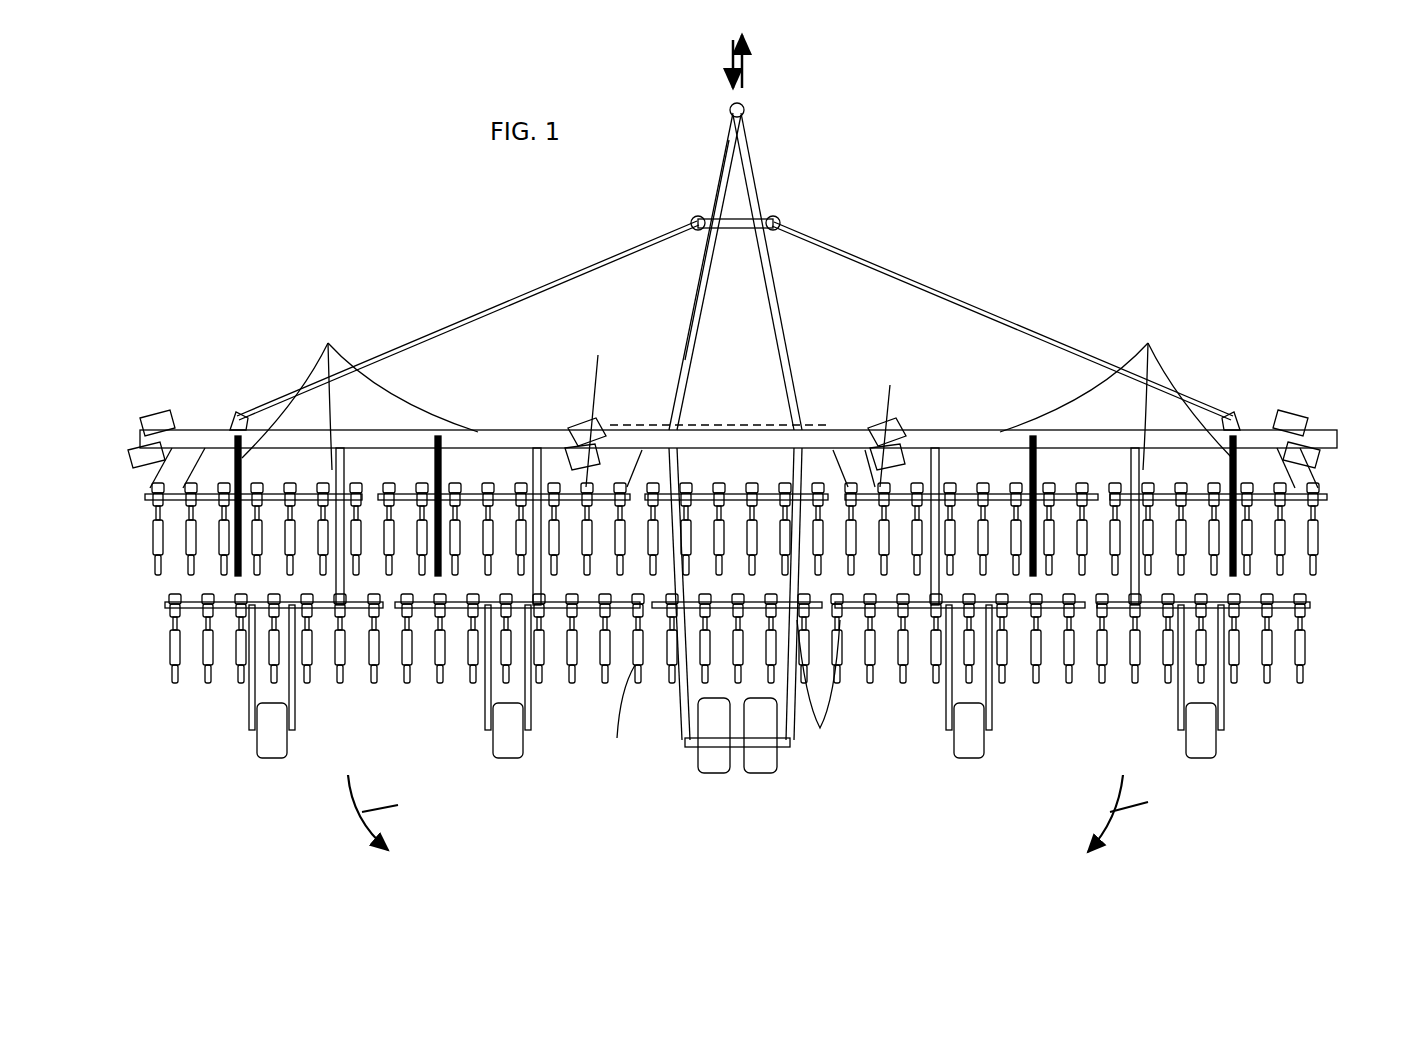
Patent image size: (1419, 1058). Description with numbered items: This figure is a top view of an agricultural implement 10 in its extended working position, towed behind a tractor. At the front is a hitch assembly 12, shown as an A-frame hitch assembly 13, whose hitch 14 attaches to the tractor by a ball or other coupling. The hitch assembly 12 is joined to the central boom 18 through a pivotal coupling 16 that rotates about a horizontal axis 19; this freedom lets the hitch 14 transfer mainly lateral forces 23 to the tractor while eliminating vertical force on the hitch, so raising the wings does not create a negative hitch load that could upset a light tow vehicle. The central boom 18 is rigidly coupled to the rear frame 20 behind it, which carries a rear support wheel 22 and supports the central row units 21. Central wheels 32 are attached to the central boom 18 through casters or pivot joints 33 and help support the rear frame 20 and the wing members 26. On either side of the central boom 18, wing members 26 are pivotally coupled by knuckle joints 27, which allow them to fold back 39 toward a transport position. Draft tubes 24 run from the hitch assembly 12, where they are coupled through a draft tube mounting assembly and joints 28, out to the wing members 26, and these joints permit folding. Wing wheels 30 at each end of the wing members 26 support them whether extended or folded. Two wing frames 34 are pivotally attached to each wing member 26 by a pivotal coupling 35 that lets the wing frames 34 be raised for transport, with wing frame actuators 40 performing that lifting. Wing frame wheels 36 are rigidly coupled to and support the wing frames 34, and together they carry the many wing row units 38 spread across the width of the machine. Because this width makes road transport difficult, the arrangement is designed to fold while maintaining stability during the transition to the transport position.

The implement 10 is at (893, 178).
The hitch assembly 12 is at (760, 160).
The A-frame hitch assembly 13 is at (795, 292).
The hitch 14 is at (732, 103).
The pivotal coupling 16 is at (800, 428).
The central boom 18 is at (850, 433).
The horizontal axis 19 is at (670, 428).
The rear frame 20 is at (684, 712).
The central row units 21 is at (723, 696).
The rear support wheel 22 is at (765, 762).
The lateral forces 23 is at (745, 58).
The draft tubes 24 is at (596, 262).
The wing members 26 is at (197, 428).
The knuckle joint 27 is at (555, 440).
The draft tube mounting assembly and joints 28 is at (696, 216).
The wing wheels 30 is at (165, 415).
The central wheels 32 is at (578, 430).
The pivot joints 33 is at (754, 406).
The wing frames 34 is at (232, 575).
The pivotal coupling 35 is at (737, 390).
The wing frame wheels 36 is at (272, 758).
The wing row units 38 is at (1335, 540).
The fold back 39 is at (767, 813).
The wing frame actuators 40 is at (245, 470).